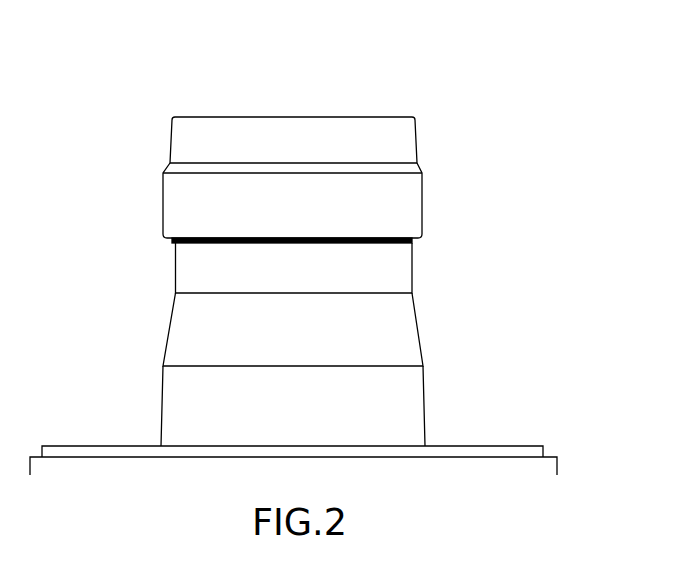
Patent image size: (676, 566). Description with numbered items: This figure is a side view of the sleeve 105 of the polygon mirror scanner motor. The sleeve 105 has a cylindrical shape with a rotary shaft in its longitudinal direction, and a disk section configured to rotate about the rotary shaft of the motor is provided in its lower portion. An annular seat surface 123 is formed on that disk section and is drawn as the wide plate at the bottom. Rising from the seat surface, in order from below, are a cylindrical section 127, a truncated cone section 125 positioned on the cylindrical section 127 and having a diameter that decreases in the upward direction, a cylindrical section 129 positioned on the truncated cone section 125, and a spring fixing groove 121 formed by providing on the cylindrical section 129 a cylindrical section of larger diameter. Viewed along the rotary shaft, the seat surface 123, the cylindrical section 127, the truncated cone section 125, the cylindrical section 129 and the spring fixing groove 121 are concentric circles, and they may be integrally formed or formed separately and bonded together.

The sleeve 105 is at (185, 87).
The spring fixing groove 121 is at (412, 242).
The cylindrical section 129 is at (190, 273).
The truncated cone section 125 is at (402, 333).
The cylindrical section 127 is at (407, 402).
The seat surface 123 is at (518, 443).